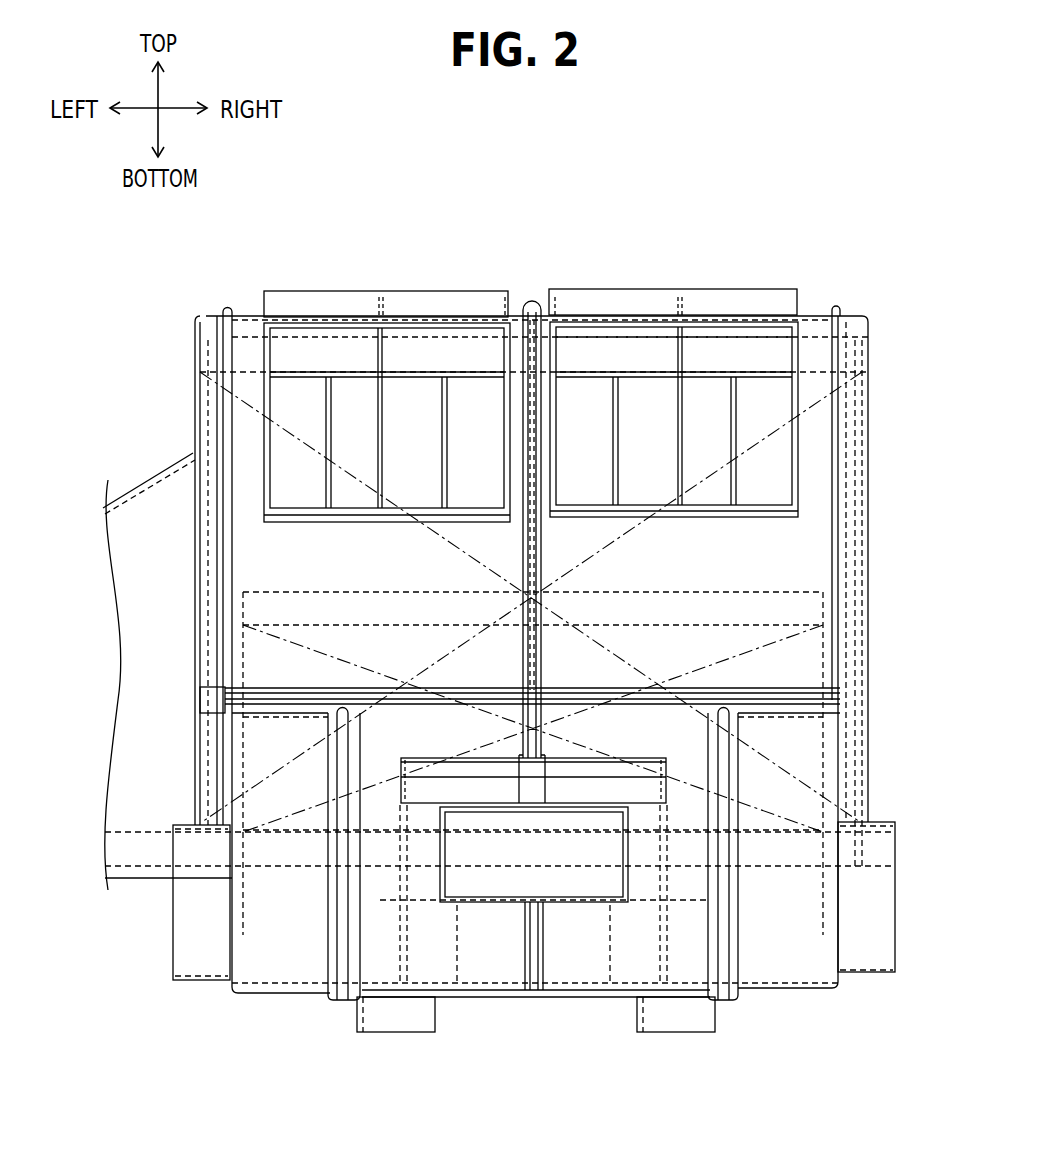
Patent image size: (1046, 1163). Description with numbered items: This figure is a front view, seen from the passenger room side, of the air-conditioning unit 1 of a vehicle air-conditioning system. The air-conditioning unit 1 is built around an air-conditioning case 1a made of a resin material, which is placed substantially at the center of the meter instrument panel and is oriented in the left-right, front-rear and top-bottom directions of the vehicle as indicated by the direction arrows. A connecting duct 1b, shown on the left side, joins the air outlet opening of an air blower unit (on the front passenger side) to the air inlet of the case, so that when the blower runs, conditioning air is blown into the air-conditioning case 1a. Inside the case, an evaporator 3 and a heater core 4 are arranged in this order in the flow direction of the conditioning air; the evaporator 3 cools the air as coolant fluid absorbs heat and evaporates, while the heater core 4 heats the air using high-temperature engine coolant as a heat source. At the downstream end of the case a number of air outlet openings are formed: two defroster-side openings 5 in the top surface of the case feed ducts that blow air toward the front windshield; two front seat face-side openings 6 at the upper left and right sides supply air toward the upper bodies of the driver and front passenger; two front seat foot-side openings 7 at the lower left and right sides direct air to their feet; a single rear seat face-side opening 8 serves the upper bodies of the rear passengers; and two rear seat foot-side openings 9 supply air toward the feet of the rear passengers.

The air-conditioning unit 1 is at (250, 312).
The air-conditioning case 1a is at (816, 306).
The connecting duct 1b is at (158, 515).
The evaporator 3 is at (760, 368).
The heater core 4 is at (785, 625).
The defroster-side opening 5 is at (412, 290).
The front seat face-side opening 6 is at (474, 415).
The front seat foot-side opening 7 is at (173, 958).
The rear seat face-side opening 8 is at (572, 877).
The rear seat foot-side opening 9 is at (396, 1020).